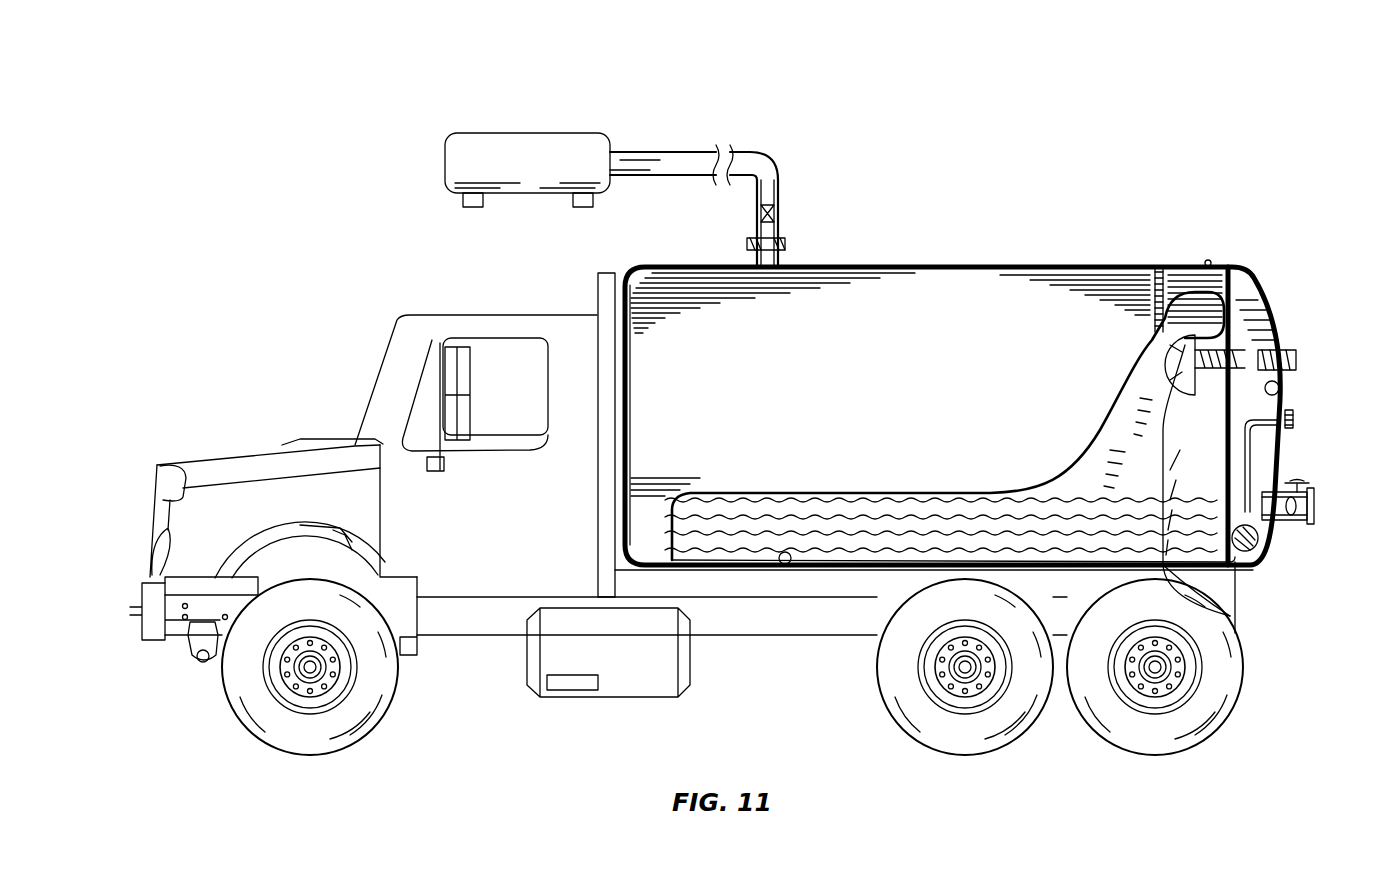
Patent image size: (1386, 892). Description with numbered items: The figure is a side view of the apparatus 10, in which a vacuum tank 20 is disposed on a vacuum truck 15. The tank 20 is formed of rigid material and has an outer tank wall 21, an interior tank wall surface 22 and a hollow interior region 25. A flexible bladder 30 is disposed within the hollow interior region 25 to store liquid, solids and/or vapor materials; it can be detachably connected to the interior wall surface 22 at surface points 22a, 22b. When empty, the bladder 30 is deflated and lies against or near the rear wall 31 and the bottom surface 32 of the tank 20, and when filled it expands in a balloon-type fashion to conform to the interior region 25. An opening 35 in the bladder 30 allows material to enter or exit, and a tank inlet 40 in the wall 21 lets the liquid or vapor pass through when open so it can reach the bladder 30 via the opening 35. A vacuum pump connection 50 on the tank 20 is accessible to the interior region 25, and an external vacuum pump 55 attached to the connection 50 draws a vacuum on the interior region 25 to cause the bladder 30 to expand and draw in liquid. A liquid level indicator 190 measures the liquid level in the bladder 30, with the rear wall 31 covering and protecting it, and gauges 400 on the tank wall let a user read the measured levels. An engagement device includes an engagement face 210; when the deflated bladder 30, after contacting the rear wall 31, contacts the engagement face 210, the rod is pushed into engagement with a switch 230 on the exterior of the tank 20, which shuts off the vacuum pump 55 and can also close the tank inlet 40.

The apparatus 10 is at (235, 103).
The vacuum truck 15 is at (278, 440).
The vacuum tank 20 is at (992, 268).
The outer tank wall 21 is at (1279, 328).
The interior tank wall surface 22 is at (631, 400).
The surface point 22a is at (1157, 276).
The surface point 22b is at (1232, 616).
The hollow interior region 25 is at (887, 380).
The bladder 30 is at (1108, 410).
The rear wall 31 is at (1246, 270).
The bottom surface 32 is at (785, 566).
The opening 35 is at (1158, 442).
The tank inlet 40 is at (1300, 524).
The vacuum pump connection 50 is at (786, 245).
The vacuum pump 55 is at (529, 134).
The liquid level indicator 190 is at (1258, 548).
The engagement face 210 is at (1165, 368).
The switch 230 is at (1298, 360).
The gauges 400 is at (1294, 420).